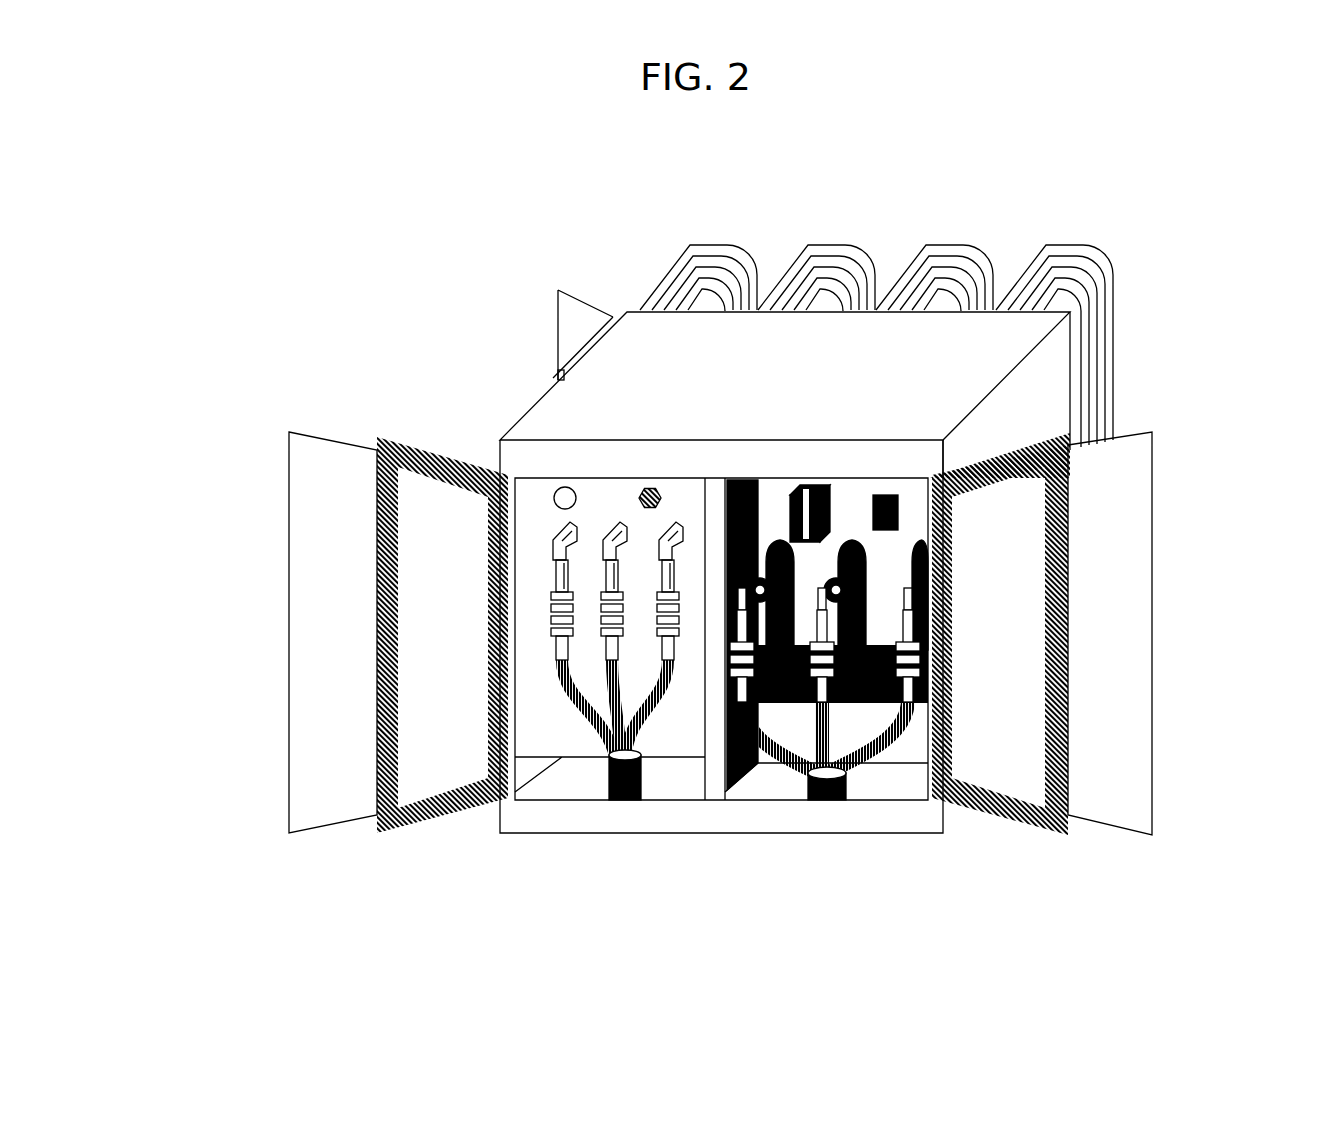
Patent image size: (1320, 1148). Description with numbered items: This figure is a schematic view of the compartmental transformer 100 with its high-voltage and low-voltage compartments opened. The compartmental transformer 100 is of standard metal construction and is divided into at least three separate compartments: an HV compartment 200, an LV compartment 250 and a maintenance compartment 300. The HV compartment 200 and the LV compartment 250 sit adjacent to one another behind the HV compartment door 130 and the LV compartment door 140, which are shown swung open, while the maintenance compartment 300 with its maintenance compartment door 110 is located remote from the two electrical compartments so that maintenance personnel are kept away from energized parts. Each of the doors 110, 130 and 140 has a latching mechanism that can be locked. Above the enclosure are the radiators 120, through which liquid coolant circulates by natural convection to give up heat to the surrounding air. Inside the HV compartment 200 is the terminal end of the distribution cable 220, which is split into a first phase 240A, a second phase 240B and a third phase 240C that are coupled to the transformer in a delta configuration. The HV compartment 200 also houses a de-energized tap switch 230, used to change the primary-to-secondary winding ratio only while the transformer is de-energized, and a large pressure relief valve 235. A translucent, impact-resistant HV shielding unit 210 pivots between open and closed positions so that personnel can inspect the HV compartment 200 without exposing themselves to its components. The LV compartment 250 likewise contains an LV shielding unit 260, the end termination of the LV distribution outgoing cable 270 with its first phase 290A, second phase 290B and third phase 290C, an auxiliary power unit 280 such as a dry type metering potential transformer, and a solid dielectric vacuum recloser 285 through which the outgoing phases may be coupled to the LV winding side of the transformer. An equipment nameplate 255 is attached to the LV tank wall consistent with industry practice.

The compartmental transformer 100 is at (296, 330).
The maintenance compartment door 110 is at (583, 298).
The maintenance compartment 300 is at (577, 353).
The radiators 120 is at (690, 250).
The HV compartment door 130 is at (289, 648).
The LV compartment door 140 is at (1153, 650).
The HV compartment 200 is at (563, 733).
The HV shielding unit 210 is at (453, 812).
The distribution cable 220 is at (628, 758).
The de-energized tap switch 230 is at (651, 487).
The pressure relief valve 235 is at (567, 487).
The first phase 240A is at (545, 618).
The second phase 240B is at (610, 610).
The third phase 240C is at (663, 597).
The LV compartment 250 is at (905, 753).
The equipment nameplate 255 is at (940, 440).
The LV shielding unit 260 is at (998, 827).
The LV distribution outgoing cable 270 is at (828, 770).
The auxiliary power unit 280 is at (806, 490).
The solid dielectric vacuum recloser 285 is at (883, 495).
The first phase 290A is at (870, 662).
The second phase 290B is at (828, 613).
The third phase 290C is at (736, 590).